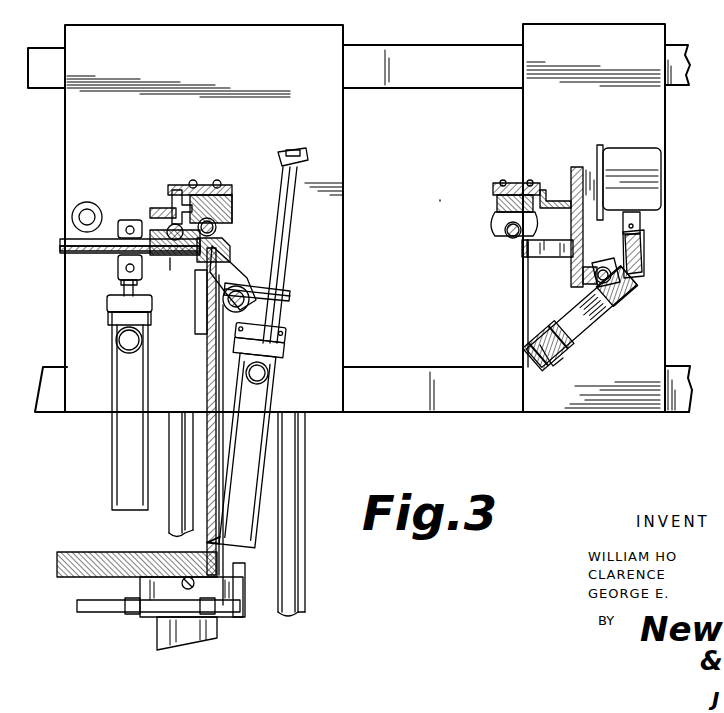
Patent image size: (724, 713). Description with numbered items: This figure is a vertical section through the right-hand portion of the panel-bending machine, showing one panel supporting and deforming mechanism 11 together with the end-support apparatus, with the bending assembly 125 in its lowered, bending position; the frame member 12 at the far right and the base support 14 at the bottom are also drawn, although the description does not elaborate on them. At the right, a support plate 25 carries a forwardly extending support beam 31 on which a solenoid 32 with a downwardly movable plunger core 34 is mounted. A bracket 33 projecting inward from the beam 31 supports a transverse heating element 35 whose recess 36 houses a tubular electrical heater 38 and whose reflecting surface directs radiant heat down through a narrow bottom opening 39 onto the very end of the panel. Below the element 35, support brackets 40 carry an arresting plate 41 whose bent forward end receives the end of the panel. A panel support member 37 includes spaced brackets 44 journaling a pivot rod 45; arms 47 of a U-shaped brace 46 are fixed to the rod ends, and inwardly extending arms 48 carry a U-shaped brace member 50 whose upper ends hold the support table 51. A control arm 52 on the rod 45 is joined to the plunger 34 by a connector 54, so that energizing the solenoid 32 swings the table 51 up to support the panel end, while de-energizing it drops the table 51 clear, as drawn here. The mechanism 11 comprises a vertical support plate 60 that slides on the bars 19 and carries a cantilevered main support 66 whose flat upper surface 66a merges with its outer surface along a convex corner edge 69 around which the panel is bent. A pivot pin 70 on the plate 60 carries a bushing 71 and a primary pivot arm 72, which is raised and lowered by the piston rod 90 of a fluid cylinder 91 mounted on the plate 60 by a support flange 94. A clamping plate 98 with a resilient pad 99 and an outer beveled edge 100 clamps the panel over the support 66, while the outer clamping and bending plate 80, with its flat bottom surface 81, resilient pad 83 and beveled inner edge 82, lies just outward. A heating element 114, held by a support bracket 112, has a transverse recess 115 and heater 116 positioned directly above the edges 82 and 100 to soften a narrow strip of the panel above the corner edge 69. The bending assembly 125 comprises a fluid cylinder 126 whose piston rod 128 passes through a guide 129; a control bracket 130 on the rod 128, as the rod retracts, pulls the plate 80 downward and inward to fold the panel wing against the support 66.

The panel supporting and deforming mechanism 11 is at (354, 184).
The frame member 12 is at (671, 156).
The base support 14 is at (187, 645).
The bars 19 is at (502, 90).
The support plate 25 is at (665, 126).
The support beam 31 is at (578, 171).
The solenoid 32 is at (618, 160).
The bracket 33 is at (550, 197).
The plunger core 34 is at (640, 224).
The heating element 35 is at (490, 229).
The recess 36 is at (508, 233).
The panel support member 37 is at (620, 281).
The tubular electrical heater 38 is at (522, 250).
The opening 39 is at (510, 238).
The support brackets 40 is at (556, 253).
The arresting plate 41 is at (526, 262).
The brackets 44 is at (586, 285).
The pivot rod 45 is at (606, 267).
The U-shaped brace 46 is at (626, 294).
The arms 47 is at (606, 297).
The inwardly extending arms 48 is at (580, 330).
The U-shaped brace member 50 is at (545, 366).
The support table 51 is at (514, 331).
The control arm 52 is at (624, 262).
The connector 54 is at (640, 246).
The support plate 60 is at (400, 228).
The main support 66 is at (206, 337).
The upper surface 66a is at (118, 269).
The convex corner edge 69 is at (215, 239).
The pivot pin 70 is at (73, 215).
The bushing 71 is at (86, 208).
The primary pivot arm 72 is at (110, 217).
The clamping and bending plate 80 is at (240, 274).
The bottom surface 81 is at (234, 311).
The beveled inner edge 82 is at (222, 253).
The resilient pad 83 is at (200, 316).
The piston rod 90 is at (122, 291).
The fluid cylinder 91 is at (122, 449).
The support flange 94 is at (151, 316).
The clamping plate 98 is at (184, 200).
The resilient pad 99 is at (190, 271).
The outer beveled edge 100 is at (165, 257).
The support bracket 112 is at (175, 206).
The heating element 114 is at (234, 213).
The transverse recess 115 is at (226, 226).
The transverse heater 116 is at (216, 229).
The bending assembly 125 is at (291, 295).
The fluid cylinder 126 is at (262, 405).
The piston rod 128 is at (290, 251).
The guide 129 is at (304, 161).
The control bracket 130 is at (284, 299).